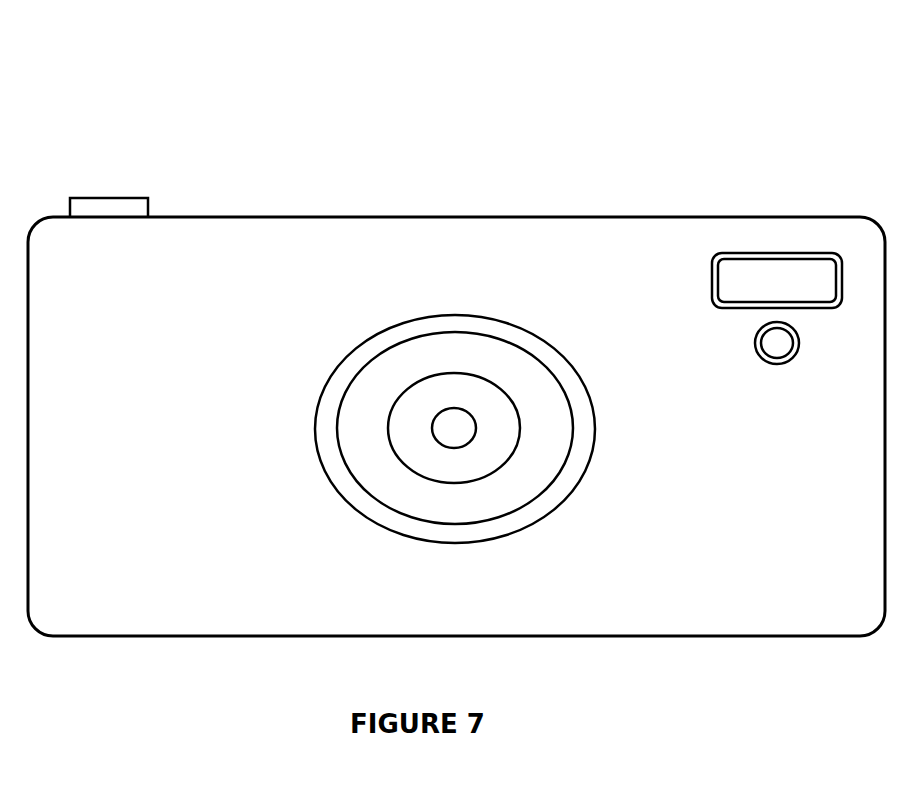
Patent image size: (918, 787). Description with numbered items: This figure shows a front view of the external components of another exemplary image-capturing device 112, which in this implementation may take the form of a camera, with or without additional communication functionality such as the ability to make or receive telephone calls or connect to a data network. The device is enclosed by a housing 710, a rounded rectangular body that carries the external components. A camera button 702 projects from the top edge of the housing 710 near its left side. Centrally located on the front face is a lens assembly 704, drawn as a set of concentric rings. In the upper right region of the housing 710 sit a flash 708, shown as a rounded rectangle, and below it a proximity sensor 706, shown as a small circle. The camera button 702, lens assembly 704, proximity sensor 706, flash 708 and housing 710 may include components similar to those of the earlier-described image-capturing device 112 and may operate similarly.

The image-capturing device 112 is at (672, 54).
The camera button 702 is at (115, 198).
The lens assembly 704 is at (527, 332).
The proximity sensor 706 is at (755, 345).
The flash 708 is at (734, 253).
The housing 710 is at (840, 218).